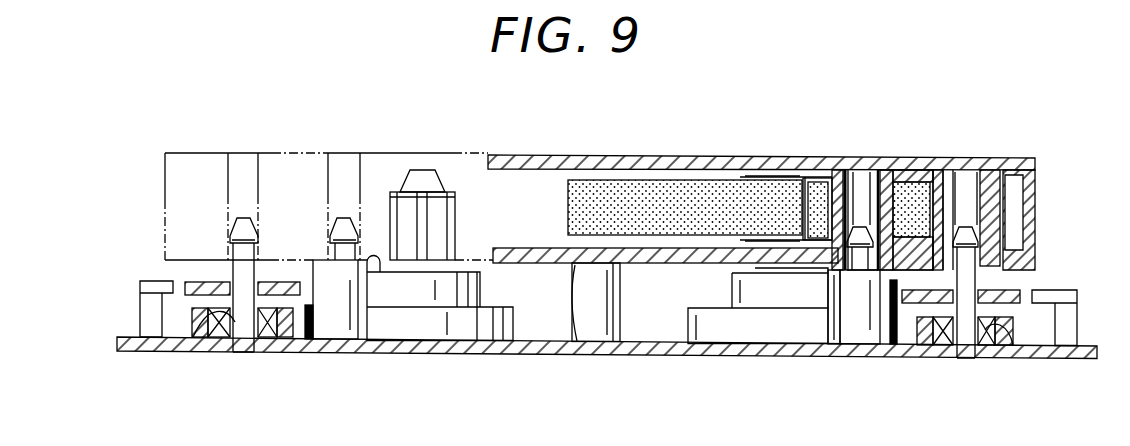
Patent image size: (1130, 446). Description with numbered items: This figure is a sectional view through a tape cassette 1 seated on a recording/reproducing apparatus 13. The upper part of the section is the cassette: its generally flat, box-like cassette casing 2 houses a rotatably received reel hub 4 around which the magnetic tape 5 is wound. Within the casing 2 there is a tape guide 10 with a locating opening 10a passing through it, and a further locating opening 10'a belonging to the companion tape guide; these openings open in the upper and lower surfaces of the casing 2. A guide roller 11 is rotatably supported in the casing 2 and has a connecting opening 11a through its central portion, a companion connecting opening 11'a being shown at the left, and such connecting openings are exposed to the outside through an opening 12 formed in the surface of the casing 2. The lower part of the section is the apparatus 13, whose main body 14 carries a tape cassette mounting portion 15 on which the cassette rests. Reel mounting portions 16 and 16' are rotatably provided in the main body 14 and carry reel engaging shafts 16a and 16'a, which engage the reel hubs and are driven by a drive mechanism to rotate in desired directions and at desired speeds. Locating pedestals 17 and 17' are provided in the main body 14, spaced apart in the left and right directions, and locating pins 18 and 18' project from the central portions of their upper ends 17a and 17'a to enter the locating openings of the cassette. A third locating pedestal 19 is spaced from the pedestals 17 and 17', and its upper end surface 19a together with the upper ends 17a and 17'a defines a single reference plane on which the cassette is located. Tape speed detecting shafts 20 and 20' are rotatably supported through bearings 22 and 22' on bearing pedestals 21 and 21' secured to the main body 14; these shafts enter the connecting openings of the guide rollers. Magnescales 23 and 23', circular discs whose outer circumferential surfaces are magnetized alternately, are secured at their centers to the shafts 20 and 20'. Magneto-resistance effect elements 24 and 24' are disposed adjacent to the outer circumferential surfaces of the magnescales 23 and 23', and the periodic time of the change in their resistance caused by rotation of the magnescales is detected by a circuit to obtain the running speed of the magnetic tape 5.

The tape cassette 1 is at (780, 147).
The cassette casing 2 is at (834, 180).
The reel hub 4 is at (745, 180).
The magnetic tape 5 is at (608, 185).
The tape guide 10 is at (812, 176).
The locating opening 10a is at (882, 195).
The locating opening 10'a is at (322, 179).
The guide roller 11 is at (1019, 189).
The connecting opening 11a is at (978, 176).
The connecting opening 11'a is at (321, 180).
The opening 12 is at (940, 180).
The recording/reproducing apparatus 13 is at (568, 358).
The main body 14 is at (545, 352).
The tape cassette mounting portion 15 is at (535, 285).
The reel mounting portion 16 is at (758, 362).
The reel engaging shaft 16a is at (773, 280).
The reel mounting portion 16' is at (440, 298).
The reel engaging shaft 16'a is at (416, 145).
The locating pedestal 17 is at (868, 344).
The upper end 17a is at (825, 277).
The locating pedestal 17' is at (331, 332).
The upper end 17'a is at (423, 330).
The locating pin 18 is at (862, 194).
The locating pin 18' is at (347, 170).
The locating pedestal 19 is at (622, 302).
The upper end surface 19a is at (580, 275).
The tape speed detecting shaft 20 is at (1011, 264).
The tape speed detecting shaft 20' is at (242, 209).
The bearing pedestal 21 is at (1014, 370).
The bearing pedestal 21' is at (185, 355).
The bearing 22 is at (953, 369).
The bearing 22' is at (245, 354).
The magnescale 23 is at (994, 260).
The magnescale 23' is at (206, 263).
The magneto-resistance effect element 24 is at (1072, 300).
The magneto-resistance effect element 24' is at (127, 302).